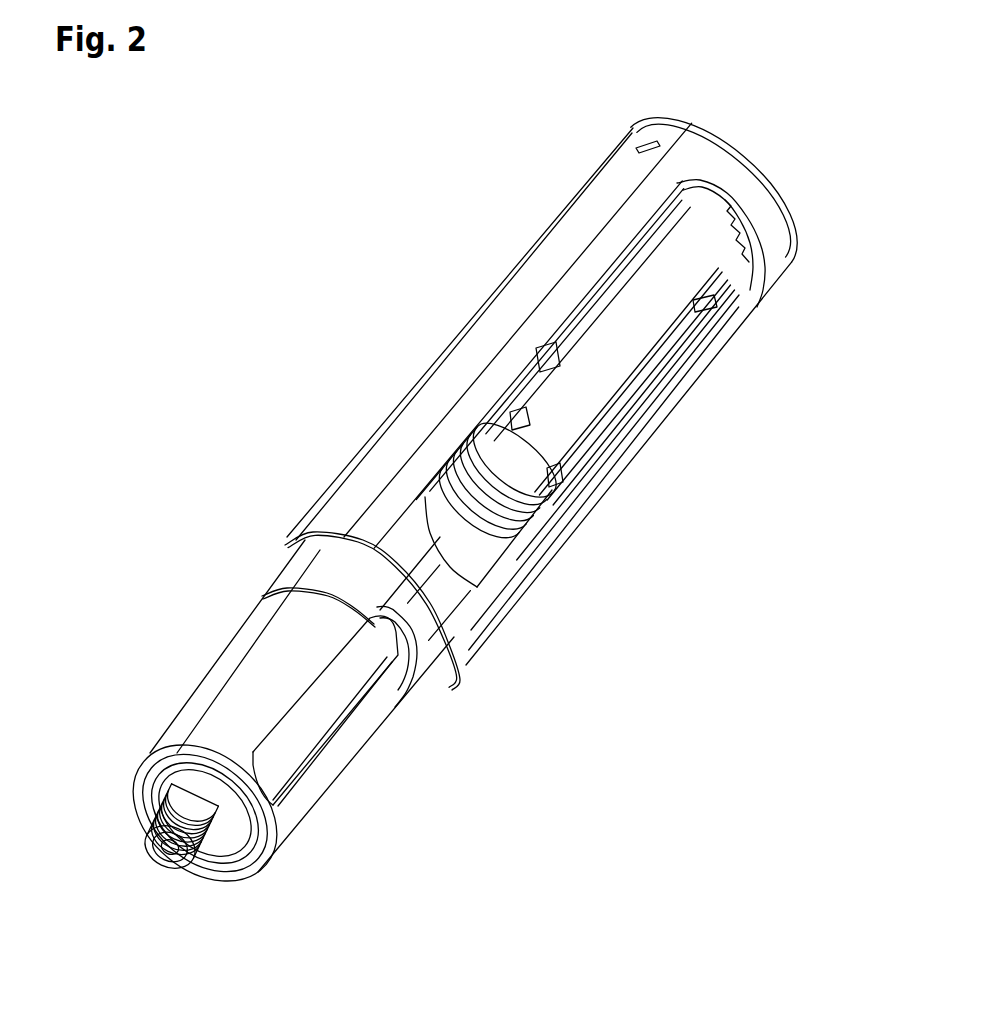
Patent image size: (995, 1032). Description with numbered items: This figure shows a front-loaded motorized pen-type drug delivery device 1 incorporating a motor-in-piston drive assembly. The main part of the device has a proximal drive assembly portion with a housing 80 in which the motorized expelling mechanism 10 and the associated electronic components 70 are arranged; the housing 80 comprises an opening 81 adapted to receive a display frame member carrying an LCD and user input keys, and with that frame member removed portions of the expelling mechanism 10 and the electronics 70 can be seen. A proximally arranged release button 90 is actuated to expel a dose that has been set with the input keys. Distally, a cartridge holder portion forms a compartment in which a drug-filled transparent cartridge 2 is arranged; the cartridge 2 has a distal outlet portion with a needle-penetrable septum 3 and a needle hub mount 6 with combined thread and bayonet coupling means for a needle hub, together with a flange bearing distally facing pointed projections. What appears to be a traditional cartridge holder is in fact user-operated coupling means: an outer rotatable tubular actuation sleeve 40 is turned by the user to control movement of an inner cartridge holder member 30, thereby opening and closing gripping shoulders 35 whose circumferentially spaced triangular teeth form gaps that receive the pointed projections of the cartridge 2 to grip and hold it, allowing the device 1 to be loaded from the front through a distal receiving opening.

The injection device 1 is at (301, 239).
The cartridge 2 is at (350, 682).
The needle-penetrable septum 3 is at (173, 847).
The needle hub mount 6 is at (150, 810).
The motorized expelling mechanism 10 is at (615, 360).
The inner cartridge holder member 30 is at (310, 760).
The gripping shoulders 35 is at (167, 773).
The outer rotatable tubular actuation sleeve 40 is at (235, 650).
The electronic components 70 is at (627, 430).
The housing 80 is at (437, 363).
The opening 81 is at (752, 307).
The release button 90 is at (755, 177).